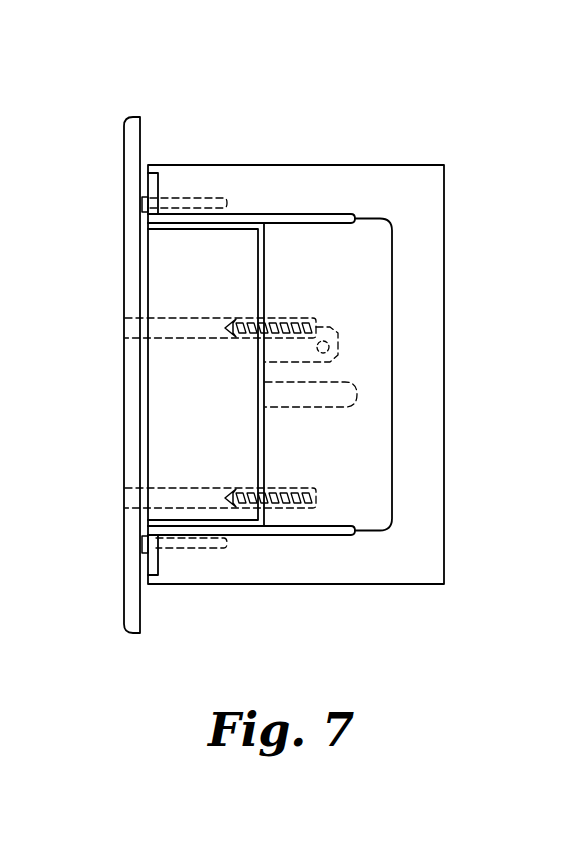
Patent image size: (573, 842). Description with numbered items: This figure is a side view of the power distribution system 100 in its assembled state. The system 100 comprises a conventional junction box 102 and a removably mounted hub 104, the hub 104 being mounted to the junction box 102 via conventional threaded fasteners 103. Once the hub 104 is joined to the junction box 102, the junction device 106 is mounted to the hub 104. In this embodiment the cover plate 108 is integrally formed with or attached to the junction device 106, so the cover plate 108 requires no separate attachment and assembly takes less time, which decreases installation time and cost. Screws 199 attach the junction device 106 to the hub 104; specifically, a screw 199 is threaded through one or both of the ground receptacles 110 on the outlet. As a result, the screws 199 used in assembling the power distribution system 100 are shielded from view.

The power distribution system 100 is at (290, 98).
The junction box 102 is at (432, 180).
The threaded fasteners 103 is at (184, 199).
The hub 104 is at (380, 413).
The junction device 106 is at (178, 229).
The cover plate 108 is at (123, 143).
The ground receptacles 110 is at (313, 321).
The screws 199 is at (225, 328).